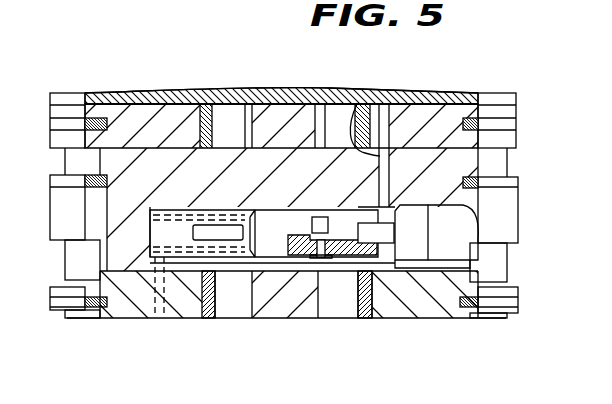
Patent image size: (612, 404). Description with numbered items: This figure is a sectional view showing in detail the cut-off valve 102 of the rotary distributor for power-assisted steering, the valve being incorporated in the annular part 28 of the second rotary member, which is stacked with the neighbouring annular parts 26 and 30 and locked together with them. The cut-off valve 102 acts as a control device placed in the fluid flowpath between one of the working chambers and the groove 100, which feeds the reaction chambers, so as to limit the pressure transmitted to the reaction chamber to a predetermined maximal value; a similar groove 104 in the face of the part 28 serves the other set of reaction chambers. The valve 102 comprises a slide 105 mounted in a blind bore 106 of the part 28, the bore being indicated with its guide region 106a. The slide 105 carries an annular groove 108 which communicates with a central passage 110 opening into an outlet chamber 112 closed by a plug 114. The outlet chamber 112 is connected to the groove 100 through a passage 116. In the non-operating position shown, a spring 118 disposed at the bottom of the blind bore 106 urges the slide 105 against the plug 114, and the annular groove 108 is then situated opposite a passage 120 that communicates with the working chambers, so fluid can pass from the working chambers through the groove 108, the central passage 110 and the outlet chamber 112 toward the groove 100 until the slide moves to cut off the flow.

The annular part 26 is at (467, 104).
The annular part 28 is at (463, 167).
The annular part 30 is at (486, 273).
The groove 100 is at (152, 99).
The cut-off valve 102 is at (188, 314).
The groove 104 is at (150, 155).
The slide 105 is at (263, 320).
The blind bore 106 is at (173, 209).
The housing guide 106a is at (158, 312).
The annular groove 108 is at (312, 224).
The central passage 110 is at (343, 266).
The outlet chamber 112 is at (395, 318).
The plug 114 is at (419, 221).
The passage 116 is at (369, 98).
The spring 118 is at (211, 210).
The passage 120 is at (330, 265).